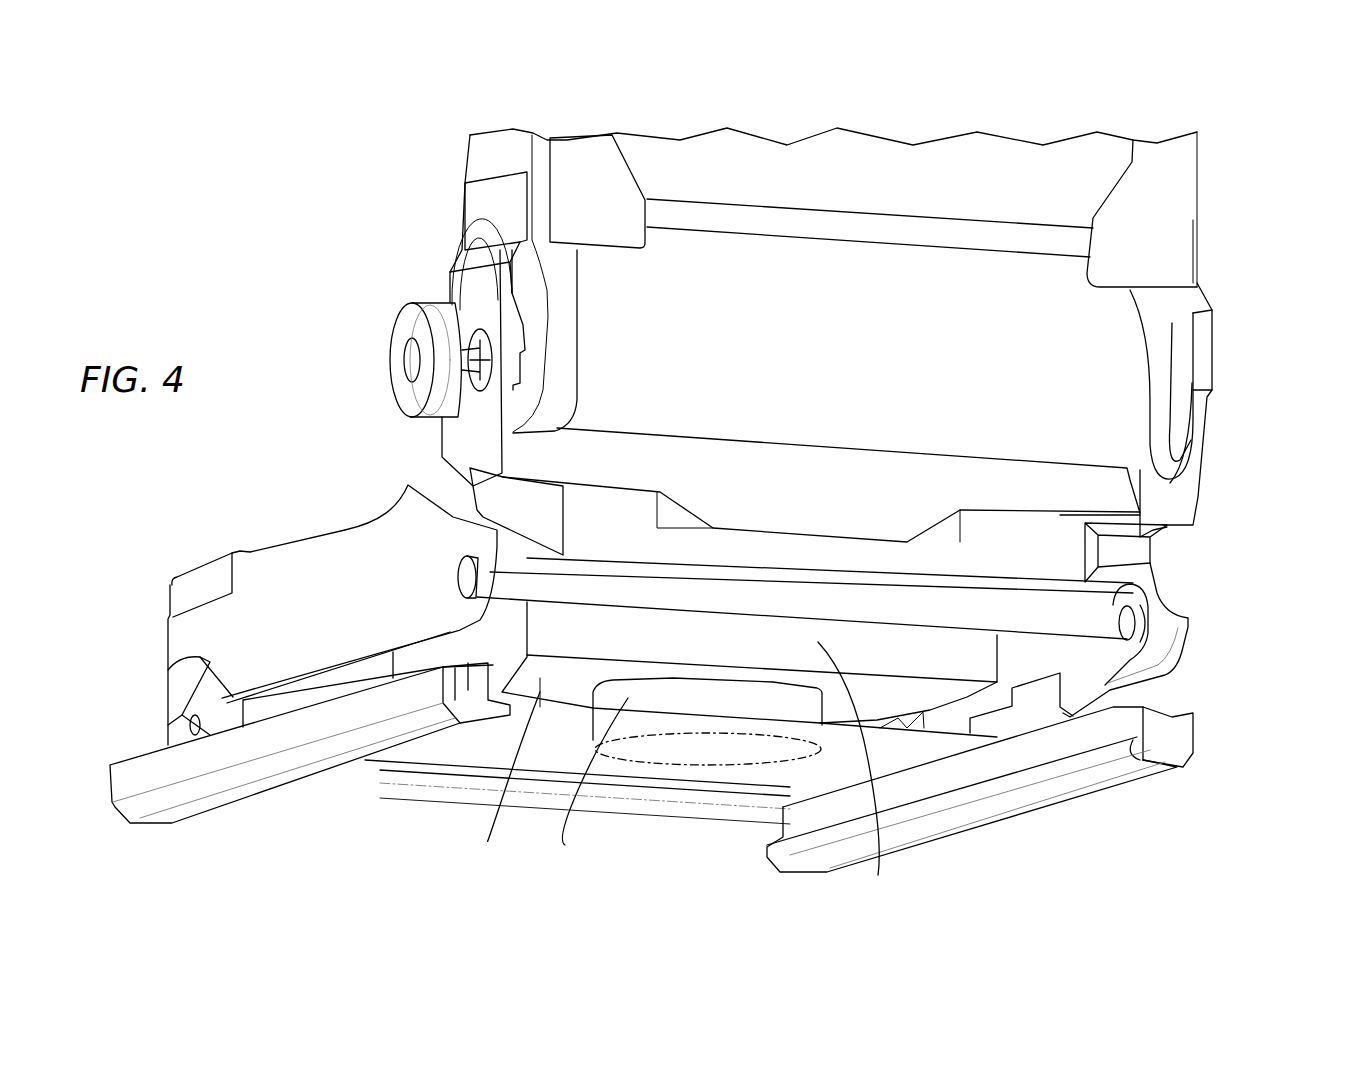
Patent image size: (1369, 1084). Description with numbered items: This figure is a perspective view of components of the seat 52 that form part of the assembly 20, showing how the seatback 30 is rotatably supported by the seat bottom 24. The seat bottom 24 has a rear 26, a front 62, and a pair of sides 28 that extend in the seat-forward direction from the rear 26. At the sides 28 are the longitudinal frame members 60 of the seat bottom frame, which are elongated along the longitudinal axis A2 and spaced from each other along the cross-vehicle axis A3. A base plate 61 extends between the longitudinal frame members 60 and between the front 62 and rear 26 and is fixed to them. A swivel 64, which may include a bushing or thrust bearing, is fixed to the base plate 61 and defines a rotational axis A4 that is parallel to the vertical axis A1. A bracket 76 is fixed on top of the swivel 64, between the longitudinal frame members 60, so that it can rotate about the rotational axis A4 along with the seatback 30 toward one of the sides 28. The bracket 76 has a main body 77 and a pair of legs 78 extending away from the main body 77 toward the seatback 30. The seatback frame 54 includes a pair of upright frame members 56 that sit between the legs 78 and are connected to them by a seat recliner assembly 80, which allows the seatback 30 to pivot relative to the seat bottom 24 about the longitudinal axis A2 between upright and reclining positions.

The assembly 20 is at (345, 245).
The seat bottom 24 is at (272, 830).
The rear 26 is at (1165, 605).
The sides 28 is at (297, 565).
The seatback 30 is at (1238, 211).
The seat 52 is at (292, 312).
The seatback frame 54 is at (583, 114).
The upright frame members 56 is at (487, 152).
The longitudinal frame members 60 is at (372, 560).
The base plate 61 is at (452, 748).
The front 62 is at (170, 640).
The swivel 64 is at (685, 773).
The bracket 76 is at (856, 773).
The main body 77 is at (818, 667).
The legs 78 is at (482, 218).
The seat recliner assembly 80 is at (412, 358).
The vertical axis A1 is at (1312, 260).
The longitudinal axis A2 is at (1162, 848).
The cross-vehicle axis A3 is at (598, 914).
The rotational axis A4 is at (707, 745).